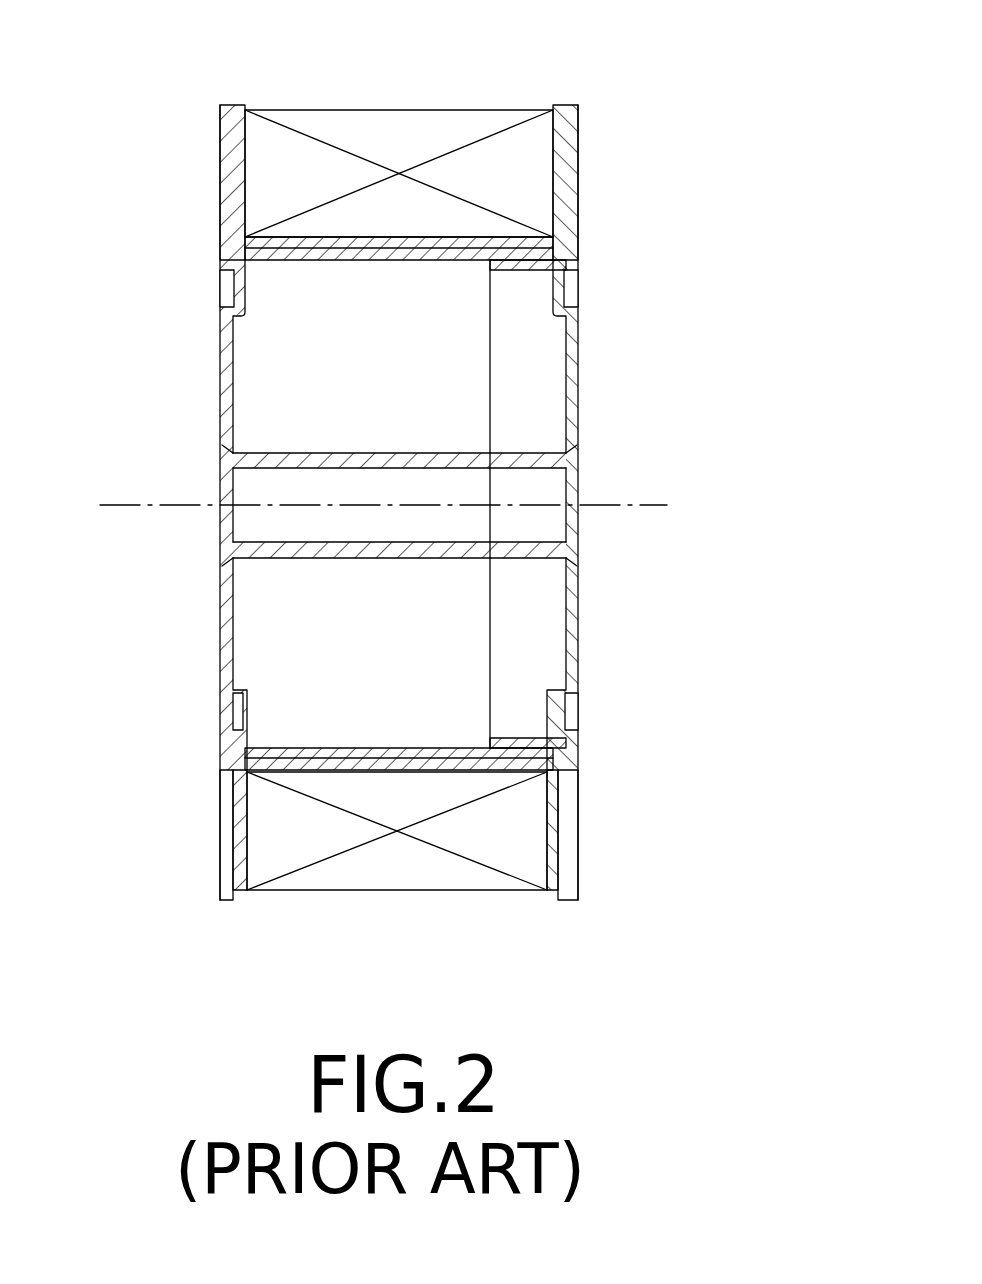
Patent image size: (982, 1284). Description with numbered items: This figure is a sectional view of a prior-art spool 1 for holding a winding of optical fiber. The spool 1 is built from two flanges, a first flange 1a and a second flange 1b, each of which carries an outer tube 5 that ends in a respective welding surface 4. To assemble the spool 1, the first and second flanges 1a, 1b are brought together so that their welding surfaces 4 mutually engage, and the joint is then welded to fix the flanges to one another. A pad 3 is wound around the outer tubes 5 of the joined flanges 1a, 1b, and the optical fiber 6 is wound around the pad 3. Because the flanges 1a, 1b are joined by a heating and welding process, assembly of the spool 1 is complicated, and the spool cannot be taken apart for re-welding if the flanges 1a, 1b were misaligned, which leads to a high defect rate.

The spool 1 is at (441, 450).
The first flange 1a is at (567, 105).
The second flange 1b is at (232, 105).
The pad 3 is at (440, 238).
The welding surface 4 is at (577, 270).
The outer tube 5 is at (566, 265).
The optical fiber 6 is at (407, 127).